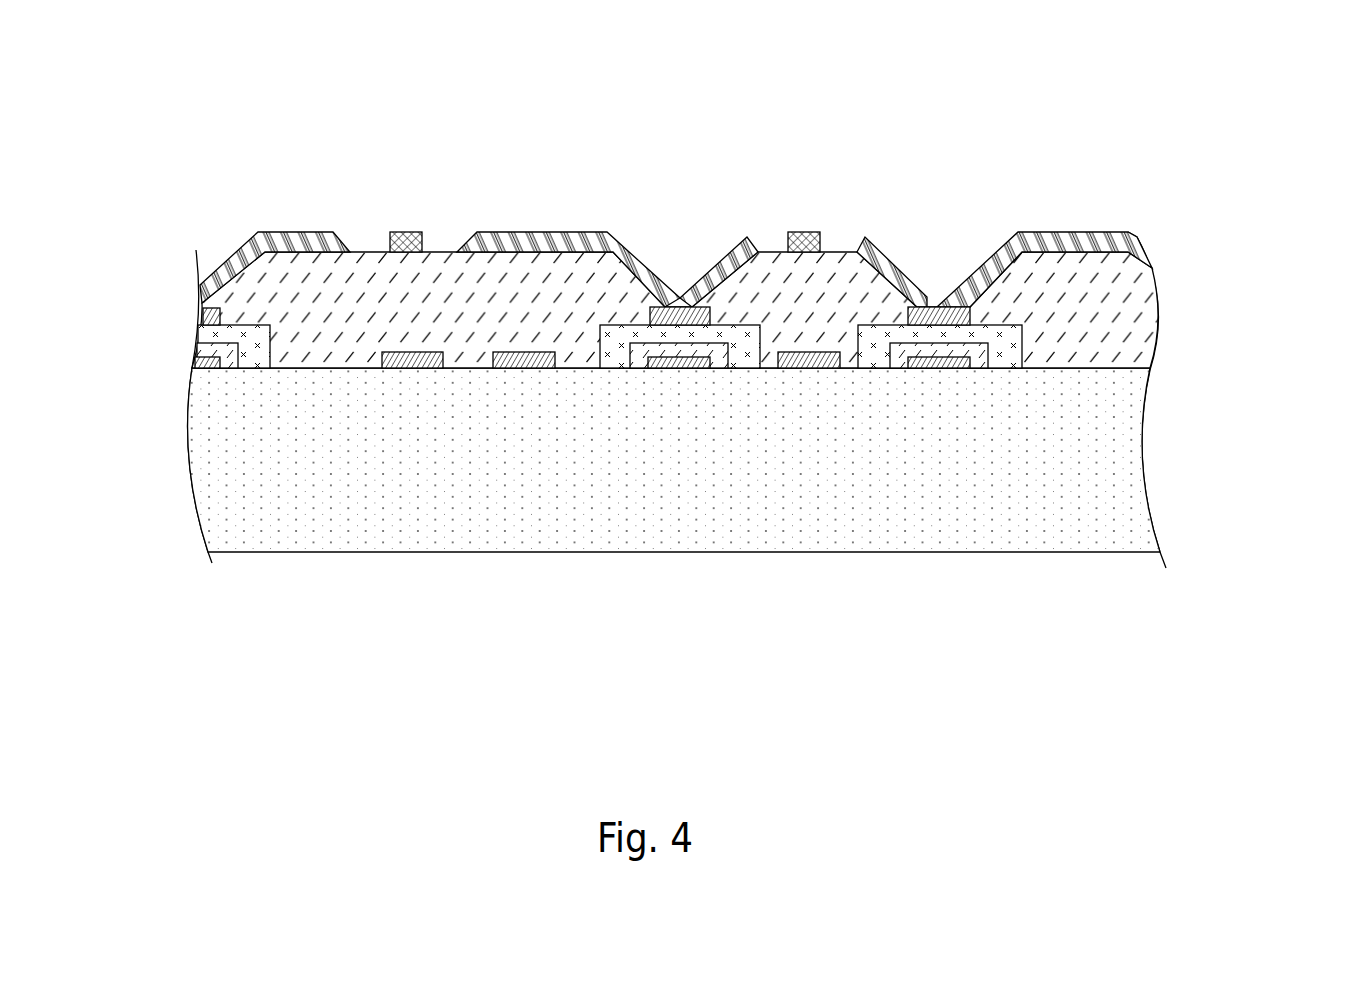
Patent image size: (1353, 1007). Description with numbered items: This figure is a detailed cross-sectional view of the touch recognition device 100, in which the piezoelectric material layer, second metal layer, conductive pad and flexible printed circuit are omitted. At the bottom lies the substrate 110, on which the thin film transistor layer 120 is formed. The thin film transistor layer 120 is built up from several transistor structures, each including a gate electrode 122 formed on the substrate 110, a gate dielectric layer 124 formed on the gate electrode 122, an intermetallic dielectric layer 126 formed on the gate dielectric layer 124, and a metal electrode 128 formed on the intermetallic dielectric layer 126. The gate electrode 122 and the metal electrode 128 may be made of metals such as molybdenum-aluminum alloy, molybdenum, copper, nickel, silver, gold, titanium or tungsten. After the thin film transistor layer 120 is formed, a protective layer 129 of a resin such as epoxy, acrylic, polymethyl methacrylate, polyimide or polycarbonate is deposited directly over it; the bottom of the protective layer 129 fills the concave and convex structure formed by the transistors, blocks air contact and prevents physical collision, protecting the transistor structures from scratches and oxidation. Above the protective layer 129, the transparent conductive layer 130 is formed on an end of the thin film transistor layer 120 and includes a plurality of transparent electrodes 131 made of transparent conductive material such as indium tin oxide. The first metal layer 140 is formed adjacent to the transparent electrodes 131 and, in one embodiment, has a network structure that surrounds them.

The touch recognition device 100 is at (114, 60).
The substrate 110 is at (1142, 492).
The thin film transistor layer 120 is at (750, 359).
The gate electrode 122 is at (970, 363).
The gate dielectric layer 124 is at (988, 345).
The intermetallic dielectric layer 126 is at (1022, 337).
The metal electrode 128 is at (972, 315).
The protective layer 129 is at (1143, 284).
The transparent conductive layer 130 is at (710, 239).
The transparent electrodes 131 is at (1078, 232).
The first metal layer 140 is at (812, 232).